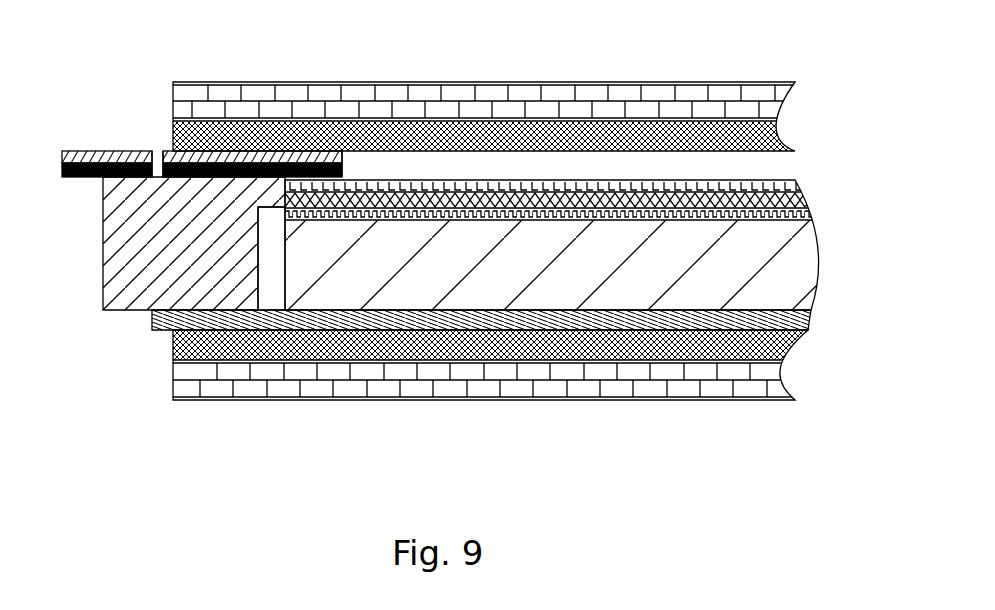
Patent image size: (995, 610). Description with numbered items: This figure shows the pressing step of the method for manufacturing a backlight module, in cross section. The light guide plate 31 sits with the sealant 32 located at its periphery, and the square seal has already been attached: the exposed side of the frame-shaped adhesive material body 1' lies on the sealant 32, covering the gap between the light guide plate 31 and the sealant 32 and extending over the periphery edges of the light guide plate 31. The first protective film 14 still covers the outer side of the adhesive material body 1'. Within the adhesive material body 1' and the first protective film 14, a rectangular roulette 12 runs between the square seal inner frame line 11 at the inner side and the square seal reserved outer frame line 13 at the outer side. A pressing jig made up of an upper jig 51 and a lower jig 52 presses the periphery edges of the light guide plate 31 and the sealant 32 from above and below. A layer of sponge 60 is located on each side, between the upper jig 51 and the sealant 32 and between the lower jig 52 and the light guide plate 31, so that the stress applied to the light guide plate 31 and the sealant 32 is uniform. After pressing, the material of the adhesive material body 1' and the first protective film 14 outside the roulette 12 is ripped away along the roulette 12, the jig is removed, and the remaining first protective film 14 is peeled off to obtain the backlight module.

The adhesive material body 1' is at (206, 140).
The square seal inner frame line 11 is at (342, 177).
The roulette 12 is at (157, 172).
The square seal reserved outer frame line 13 is at (62, 162).
The first protective film 14 is at (108, 158).
The light guide plate 31 is at (562, 285).
The sealant 32 is at (175, 275).
The upper jig 51 is at (723, 121).
The lower jig 52 is at (718, 383).
The sponge 60 is at (763, 137).